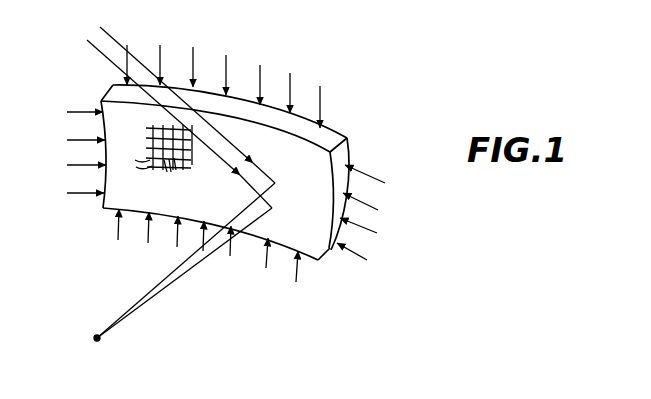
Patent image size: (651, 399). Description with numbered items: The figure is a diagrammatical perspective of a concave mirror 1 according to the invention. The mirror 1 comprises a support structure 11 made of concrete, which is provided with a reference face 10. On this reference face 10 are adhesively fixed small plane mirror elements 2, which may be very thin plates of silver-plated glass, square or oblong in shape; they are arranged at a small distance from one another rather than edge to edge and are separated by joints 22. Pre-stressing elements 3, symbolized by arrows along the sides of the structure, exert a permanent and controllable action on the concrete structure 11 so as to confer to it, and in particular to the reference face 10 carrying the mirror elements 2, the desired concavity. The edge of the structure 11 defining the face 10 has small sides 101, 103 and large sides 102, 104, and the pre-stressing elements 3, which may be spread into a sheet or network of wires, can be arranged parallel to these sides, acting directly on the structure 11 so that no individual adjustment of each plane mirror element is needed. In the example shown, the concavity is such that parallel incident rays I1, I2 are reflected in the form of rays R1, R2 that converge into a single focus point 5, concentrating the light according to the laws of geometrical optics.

The concave mirror 1 is at (99, 92).
The plane mirror elements 2 is at (172, 168).
The pre-stressing elements 3 is at (261, 70).
The focus point 5 is at (100, 354).
The reference face 10 is at (325, 253).
The support structure 11 is at (334, 130).
The joints 22 is at (155, 146).
The side of the edge of the structure 101 is at (100, 206).
The large side of the mirror 102 is at (207, 92).
The small side of the mirror 103 is at (350, 236).
The large side of the mirror 104 is at (282, 245).
The incident ray I1 is at (118, 32).
The incident ray I2 is at (88, 43).
The reflected ray R1 is at (153, 289).
The reflected ray R2 is at (176, 283).